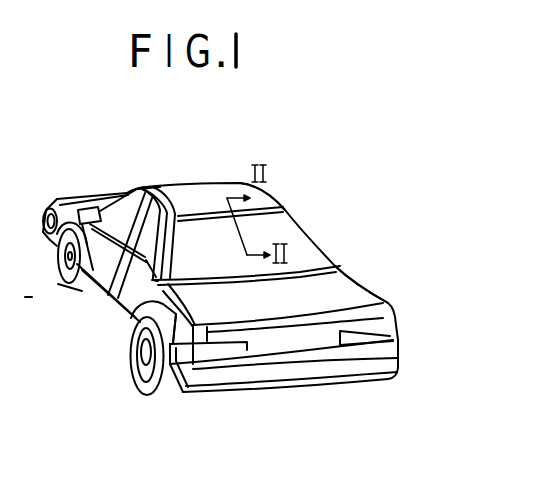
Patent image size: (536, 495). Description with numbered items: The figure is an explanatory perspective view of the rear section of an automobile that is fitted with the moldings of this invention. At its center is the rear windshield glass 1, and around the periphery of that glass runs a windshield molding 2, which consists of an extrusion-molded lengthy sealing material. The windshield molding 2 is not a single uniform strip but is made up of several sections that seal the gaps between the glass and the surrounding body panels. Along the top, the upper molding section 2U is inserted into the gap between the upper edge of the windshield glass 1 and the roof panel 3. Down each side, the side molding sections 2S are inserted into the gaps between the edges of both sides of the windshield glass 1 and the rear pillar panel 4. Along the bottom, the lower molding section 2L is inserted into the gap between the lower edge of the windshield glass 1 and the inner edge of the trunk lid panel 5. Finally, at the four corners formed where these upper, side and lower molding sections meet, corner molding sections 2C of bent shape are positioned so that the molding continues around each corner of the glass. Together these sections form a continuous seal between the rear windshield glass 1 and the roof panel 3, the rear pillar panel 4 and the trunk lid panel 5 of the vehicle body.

The rear windshield glass 1 is at (290, 230).
The windshield molding 2 is at (211, 214).
The upper molding section 2U is at (272, 200).
The lower molding section 2L is at (230, 283).
The side molding sections 2S is at (173, 237).
The corner molding sections 2C is at (140, 188).
The roof panel 3 is at (180, 193).
The rear pillar panel 4 is at (156, 247).
The trunk lid panel 5 is at (337, 292).